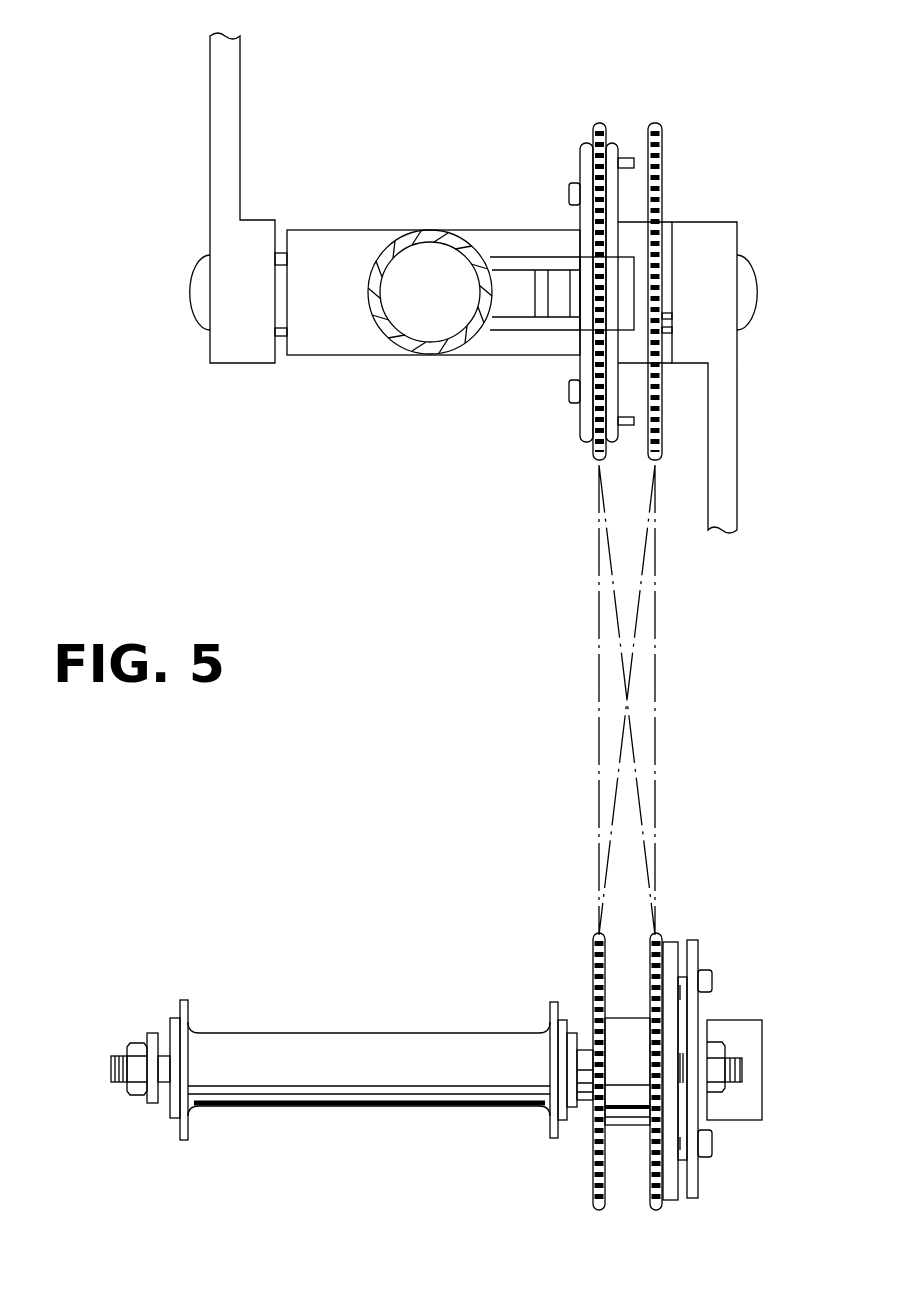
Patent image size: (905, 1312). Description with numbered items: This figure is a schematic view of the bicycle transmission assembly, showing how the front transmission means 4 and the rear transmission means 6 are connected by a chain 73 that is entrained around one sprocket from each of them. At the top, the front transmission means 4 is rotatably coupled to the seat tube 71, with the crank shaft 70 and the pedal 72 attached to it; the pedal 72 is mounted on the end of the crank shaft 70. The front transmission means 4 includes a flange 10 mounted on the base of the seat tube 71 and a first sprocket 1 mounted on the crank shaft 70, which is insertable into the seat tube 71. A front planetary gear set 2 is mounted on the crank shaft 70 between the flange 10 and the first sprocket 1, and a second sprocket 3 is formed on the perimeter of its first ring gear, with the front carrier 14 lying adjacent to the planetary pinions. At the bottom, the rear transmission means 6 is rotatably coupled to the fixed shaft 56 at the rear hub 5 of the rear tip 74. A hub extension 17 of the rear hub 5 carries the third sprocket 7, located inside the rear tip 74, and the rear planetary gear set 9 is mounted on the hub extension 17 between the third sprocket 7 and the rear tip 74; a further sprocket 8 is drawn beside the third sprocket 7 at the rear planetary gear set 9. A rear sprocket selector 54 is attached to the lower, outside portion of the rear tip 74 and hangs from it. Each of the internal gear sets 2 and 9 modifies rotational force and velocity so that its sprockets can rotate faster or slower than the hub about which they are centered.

The first sprocket 1 is at (657, 122).
The front planetary gear set 2 is at (563, 436).
The second sprocket 3 is at (598, 122).
The front transmission means 4 is at (441, 163).
The rear hub 5 is at (368, 1045).
The rear transmission means 6 is at (525, 1195).
The third sprocket 7 is at (597, 932).
The second rear sprocket 8 is at (655, 1212).
The rear planetary gear set 9 is at (708, 1182).
The flange 10 is at (586, 147).
The front carrier 14 is at (612, 147).
The hub extension 17 is at (590, 1058).
The rear sprocket selector 54 is at (768, 1065).
The fixed shaft 56 is at (113, 1065).
The crank shaft 70 is at (283, 258).
The seat tube 71 is at (430, 340).
The pedal 72 is at (242, 347).
The chain 73 is at (597, 652).
The rear tip 74 is at (693, 940).